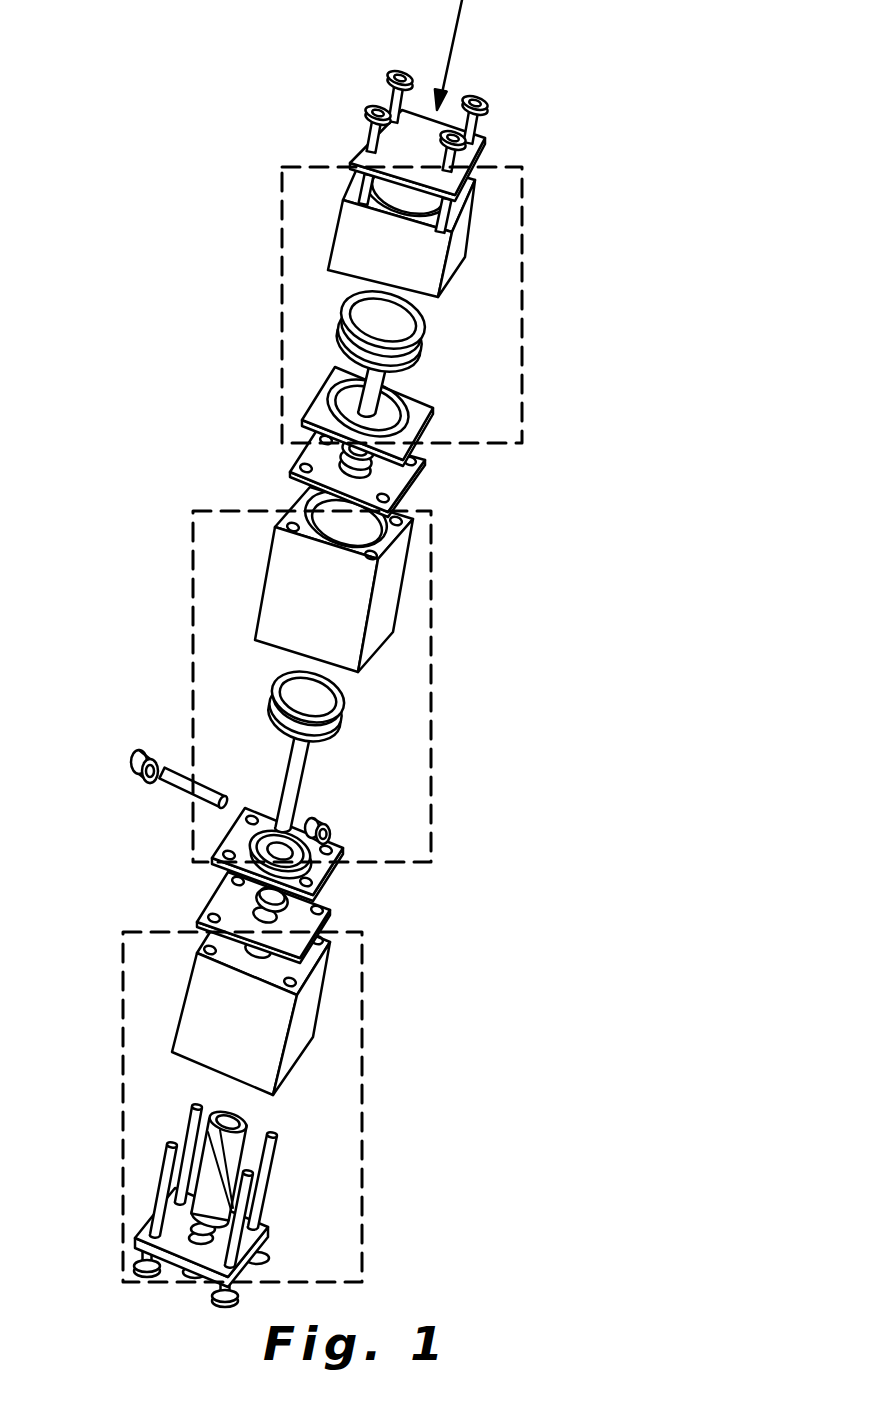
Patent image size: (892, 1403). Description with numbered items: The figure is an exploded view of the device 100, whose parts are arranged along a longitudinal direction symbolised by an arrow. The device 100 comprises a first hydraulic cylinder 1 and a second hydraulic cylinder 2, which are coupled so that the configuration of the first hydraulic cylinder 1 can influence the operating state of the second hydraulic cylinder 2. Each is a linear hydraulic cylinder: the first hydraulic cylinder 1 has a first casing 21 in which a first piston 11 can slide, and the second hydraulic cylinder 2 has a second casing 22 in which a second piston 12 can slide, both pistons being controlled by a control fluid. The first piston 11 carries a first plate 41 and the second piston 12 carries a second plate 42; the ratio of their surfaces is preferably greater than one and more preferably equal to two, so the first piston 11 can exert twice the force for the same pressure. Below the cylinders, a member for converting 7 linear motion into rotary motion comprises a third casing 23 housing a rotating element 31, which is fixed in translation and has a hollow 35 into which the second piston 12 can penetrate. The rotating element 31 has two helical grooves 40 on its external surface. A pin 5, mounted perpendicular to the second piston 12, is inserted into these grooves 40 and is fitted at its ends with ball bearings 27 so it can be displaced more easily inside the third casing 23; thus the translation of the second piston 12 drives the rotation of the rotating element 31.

The device 100 is at (342, 110).
The first hydraulic cylinder 1 is at (525, 305).
The second hydraulic cylinder 2 is at (433, 680).
The member for converting 7 is at (362, 1103).
The first casing 21 is at (455, 238).
The second casing 22 is at (387, 583).
The third casing 23 is at (300, 1017).
The first plate 41 is at (390, 322).
The second plate 42 is at (307, 698).
The first piston 11 is at (367, 393).
The second piston 12 is at (293, 770).
The ball bearings 27 is at (137, 758).
The pin 5 is at (182, 787).
The hollow 35 is at (195, 1107).
The grooves 40 is at (225, 1153).
The rotating element 31 is at (208, 1192).